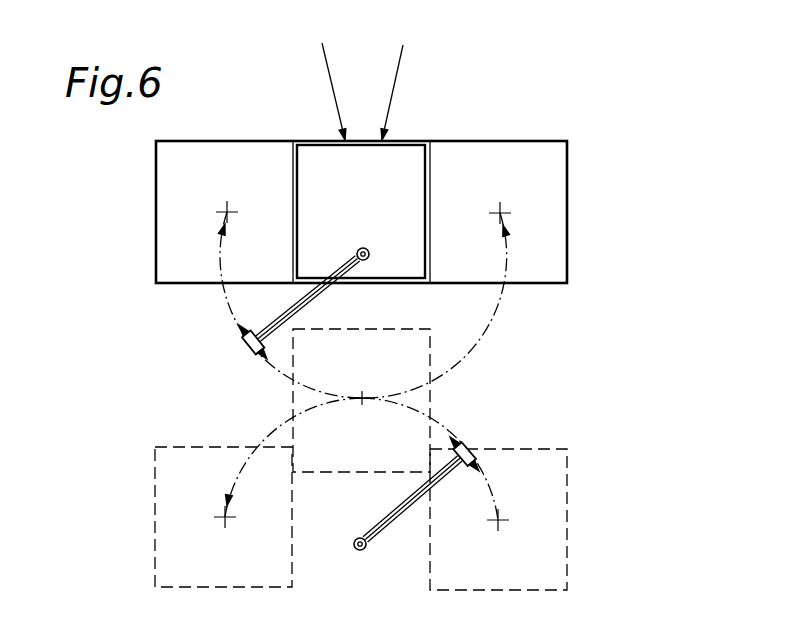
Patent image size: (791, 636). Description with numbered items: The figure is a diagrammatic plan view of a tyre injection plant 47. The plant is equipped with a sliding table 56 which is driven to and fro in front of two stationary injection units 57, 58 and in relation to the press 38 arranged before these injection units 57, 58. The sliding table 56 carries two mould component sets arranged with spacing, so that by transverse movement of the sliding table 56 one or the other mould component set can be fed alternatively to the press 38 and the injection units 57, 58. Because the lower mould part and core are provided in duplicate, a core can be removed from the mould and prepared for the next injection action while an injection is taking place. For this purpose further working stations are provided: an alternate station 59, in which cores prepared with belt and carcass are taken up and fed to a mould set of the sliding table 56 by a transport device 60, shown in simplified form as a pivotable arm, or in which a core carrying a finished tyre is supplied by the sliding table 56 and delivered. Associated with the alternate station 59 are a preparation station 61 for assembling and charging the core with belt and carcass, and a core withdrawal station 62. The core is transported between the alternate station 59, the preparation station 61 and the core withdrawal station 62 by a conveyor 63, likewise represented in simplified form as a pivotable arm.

The press 38 is at (408, 153).
The tyre injection plant 47 is at (535, 138).
The sliding table 56 is at (577, 216).
The injection unit 57 is at (325, 72).
The injection unit 58 is at (392, 92).
The alternate station 59 is at (420, 405).
The transport device 60 is at (312, 300).
The preparation station 61 is at (168, 548).
The core withdrawal station 62 is at (555, 567).
The conveyor 63 is at (392, 527).